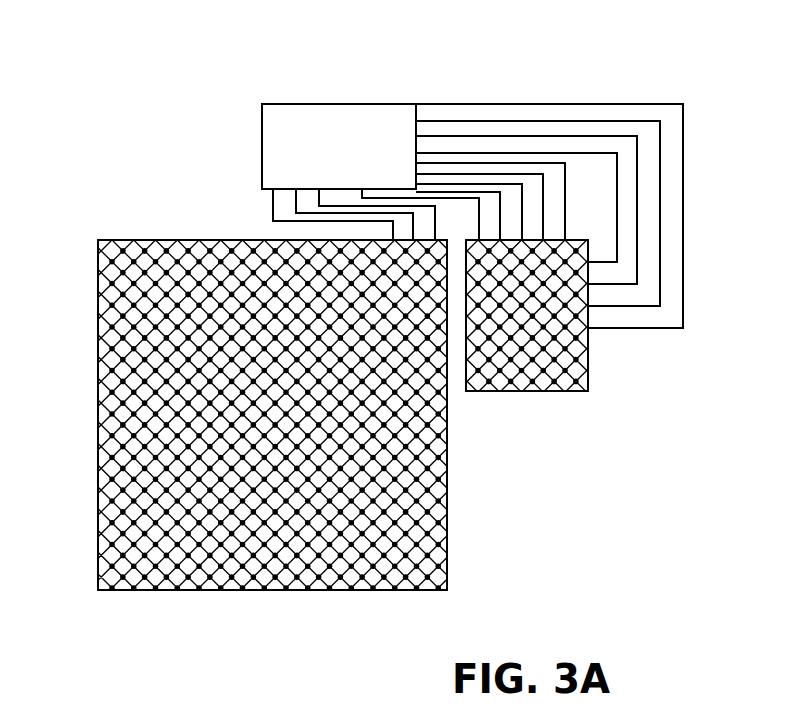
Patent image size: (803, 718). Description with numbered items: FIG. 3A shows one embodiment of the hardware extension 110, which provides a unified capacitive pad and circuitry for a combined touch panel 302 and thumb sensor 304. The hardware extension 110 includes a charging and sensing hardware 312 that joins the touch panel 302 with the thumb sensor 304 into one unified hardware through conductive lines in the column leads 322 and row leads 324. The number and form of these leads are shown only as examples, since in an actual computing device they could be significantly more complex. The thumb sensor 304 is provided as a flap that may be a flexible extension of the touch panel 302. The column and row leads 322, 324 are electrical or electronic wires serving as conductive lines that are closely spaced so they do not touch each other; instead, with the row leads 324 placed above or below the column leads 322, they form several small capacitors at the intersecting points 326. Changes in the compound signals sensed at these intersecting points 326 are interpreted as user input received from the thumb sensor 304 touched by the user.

The hardware extension 110 is at (343, 50).
The charging and sensing hardware 312 is at (255, 123).
The column leads 322 is at (248, 207).
The row leads 324 is at (657, 342).
The touch panel 302 is at (212, 651).
The thumb sensor 304 is at (579, 393).
The intersecting points 326 is at (433, 347).